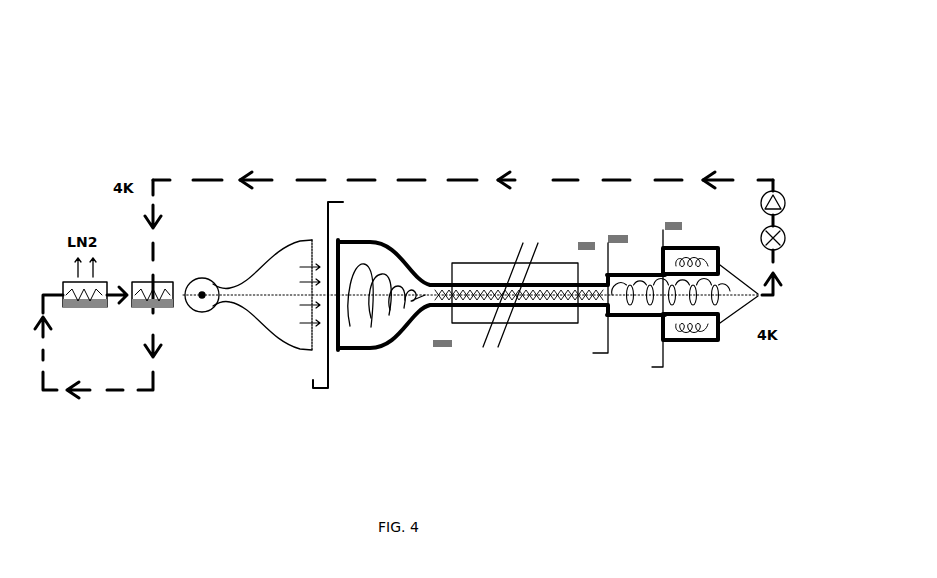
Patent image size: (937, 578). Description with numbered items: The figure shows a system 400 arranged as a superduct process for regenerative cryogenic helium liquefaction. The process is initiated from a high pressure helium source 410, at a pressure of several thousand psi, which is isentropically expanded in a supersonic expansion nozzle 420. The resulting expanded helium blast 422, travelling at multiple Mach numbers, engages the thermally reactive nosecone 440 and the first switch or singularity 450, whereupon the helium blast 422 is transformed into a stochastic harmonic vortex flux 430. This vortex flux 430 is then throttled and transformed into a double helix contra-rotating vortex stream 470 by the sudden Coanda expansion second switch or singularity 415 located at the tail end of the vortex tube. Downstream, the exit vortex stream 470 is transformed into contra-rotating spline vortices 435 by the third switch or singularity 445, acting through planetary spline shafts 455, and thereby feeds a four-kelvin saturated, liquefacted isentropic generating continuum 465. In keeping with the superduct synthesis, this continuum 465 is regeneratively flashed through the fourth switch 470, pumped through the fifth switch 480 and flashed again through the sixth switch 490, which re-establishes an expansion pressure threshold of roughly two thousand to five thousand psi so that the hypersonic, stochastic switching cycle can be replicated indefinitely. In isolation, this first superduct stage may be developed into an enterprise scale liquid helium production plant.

The system 400 is at (748, 78).
The helium source 410 is at (202, 300).
The second switch or singularity 415 is at (620, 235).
The supersonic expansion nozzle 420 is at (288, 348).
The helium blast 422 is at (317, 325).
The stochastic harmonic vortex flux 430 is at (363, 323).
The spline vortices 435 is at (702, 326).
The thermally reactive nosecone 440 is at (400, 330).
The third switch or singularity 445 is at (672, 222).
The first switch or singularity 450 is at (328, 200).
The planetary spline shafts 455 is at (687, 341).
The 4K saturated/liquefacted isentropic generating continuum 465 is at (723, 300).
The double helix contra-rotating vortex stream 470 is at (160, 282).
The fifth switch 480 is at (70, 283).
The sixth switch 490 is at (467, 263).